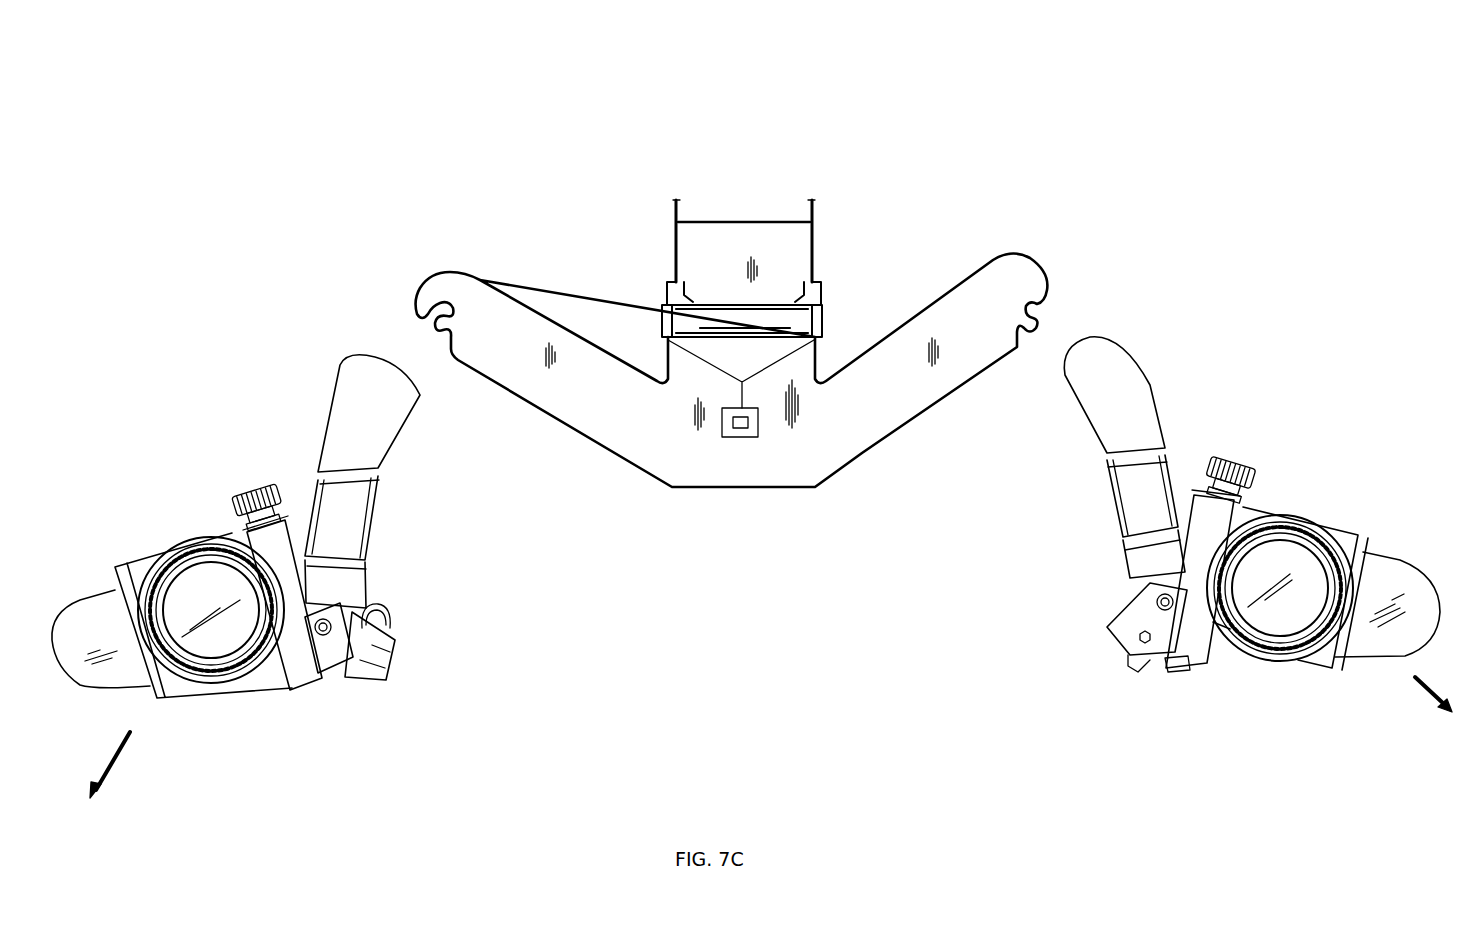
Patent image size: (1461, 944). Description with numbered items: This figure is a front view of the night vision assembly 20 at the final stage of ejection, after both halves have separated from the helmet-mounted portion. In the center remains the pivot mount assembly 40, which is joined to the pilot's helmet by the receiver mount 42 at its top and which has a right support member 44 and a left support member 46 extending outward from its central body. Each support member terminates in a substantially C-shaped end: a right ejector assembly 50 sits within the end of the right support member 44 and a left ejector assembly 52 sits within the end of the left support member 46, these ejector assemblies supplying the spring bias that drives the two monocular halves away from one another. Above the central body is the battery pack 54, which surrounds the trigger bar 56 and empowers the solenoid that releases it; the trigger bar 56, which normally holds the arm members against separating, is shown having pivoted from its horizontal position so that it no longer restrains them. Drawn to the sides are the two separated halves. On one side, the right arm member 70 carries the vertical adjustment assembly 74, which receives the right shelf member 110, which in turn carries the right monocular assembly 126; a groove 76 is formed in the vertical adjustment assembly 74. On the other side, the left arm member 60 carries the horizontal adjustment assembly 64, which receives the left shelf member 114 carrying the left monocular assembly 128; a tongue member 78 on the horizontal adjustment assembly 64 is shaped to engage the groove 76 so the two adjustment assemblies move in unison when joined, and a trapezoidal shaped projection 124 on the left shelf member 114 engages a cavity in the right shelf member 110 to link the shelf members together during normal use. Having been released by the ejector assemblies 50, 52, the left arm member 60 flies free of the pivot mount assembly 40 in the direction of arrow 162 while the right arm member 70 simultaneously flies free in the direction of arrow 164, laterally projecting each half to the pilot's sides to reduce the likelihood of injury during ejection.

The night vision assembly 20 is at (838, 126).
The pivot mount assembly 40 is at (612, 343).
The receiver mount 42 is at (735, 233).
The right support member 44 is at (535, 381).
The left support member 46 is at (918, 330).
The right ejector assembly 50 is at (441, 303).
The left ejector assembly 52 is at (1029, 300).
The battery pack 54 is at (778, 320).
The trigger bar 56 is at (742, 428).
The left arm member 60 is at (1113, 352).
The horizontal adjustment assembly 64 is at (1108, 607).
The right arm member 70 is at (380, 452).
The vertical adjustment assembly 74 is at (398, 641).
The groove 76 is at (355, 660).
The tongue member 78 is at (1143, 653).
The right shelf member 110 is at (309, 690).
The left shelf member 114 is at (1212, 660).
The trapezoidal shaped projection 124 is at (1177, 671).
The right monocular assembly 126 is at (199, 532).
The left monocular assembly 128 is at (1303, 508).
The arrow 162 is at (1423, 688).
The arrow 164 is at (127, 748).